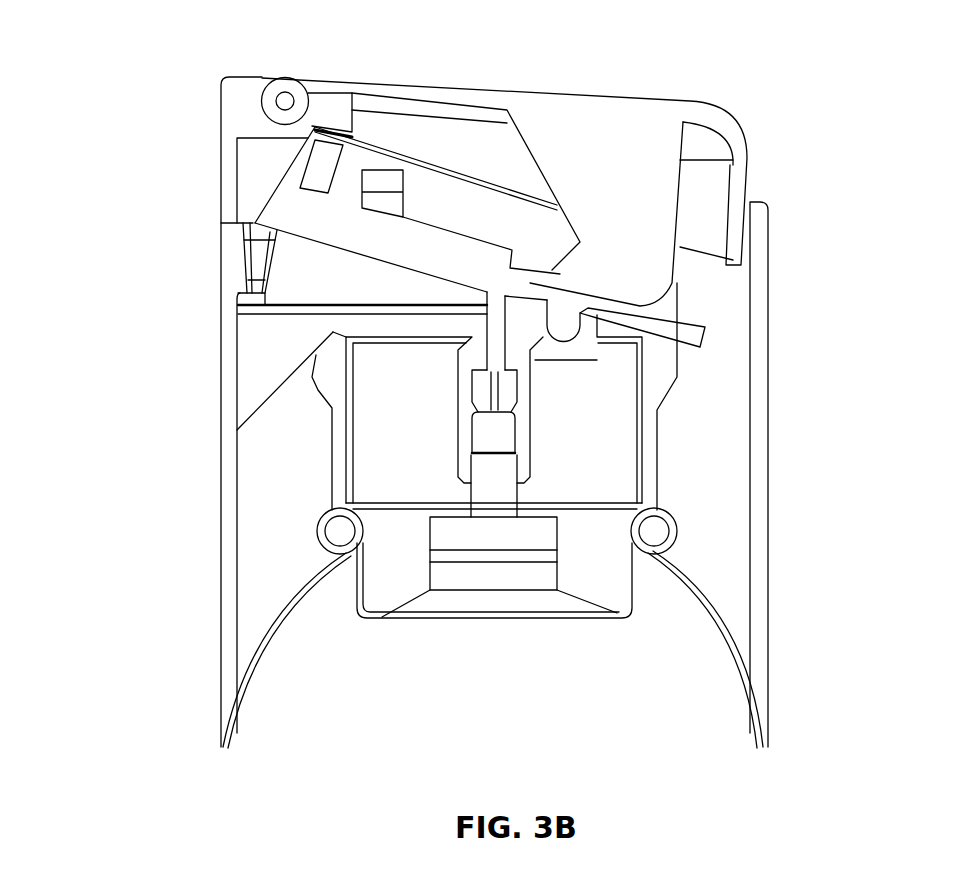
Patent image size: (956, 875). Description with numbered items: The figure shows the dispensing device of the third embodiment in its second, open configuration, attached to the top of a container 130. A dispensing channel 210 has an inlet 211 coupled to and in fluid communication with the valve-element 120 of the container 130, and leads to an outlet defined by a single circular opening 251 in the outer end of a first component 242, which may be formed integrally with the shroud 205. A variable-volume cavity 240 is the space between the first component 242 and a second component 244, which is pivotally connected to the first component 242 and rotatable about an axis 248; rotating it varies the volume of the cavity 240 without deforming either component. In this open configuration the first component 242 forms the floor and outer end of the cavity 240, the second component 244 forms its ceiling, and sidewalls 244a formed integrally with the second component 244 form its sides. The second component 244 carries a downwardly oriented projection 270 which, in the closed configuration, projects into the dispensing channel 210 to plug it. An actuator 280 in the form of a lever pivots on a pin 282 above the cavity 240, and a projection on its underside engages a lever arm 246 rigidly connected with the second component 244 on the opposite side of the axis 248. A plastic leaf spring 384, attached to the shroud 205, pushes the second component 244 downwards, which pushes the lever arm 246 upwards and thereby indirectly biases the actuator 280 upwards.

The shroud 205 is at (230, 542).
The actuator 280 is at (553, 105).
The pin 282 is at (290, 92).
The second component 244 is at (288, 197).
The plastic leaf spring 384 is at (392, 183).
The variable-volume cavity 240 is at (305, 262).
The opening 251 is at (245, 284).
The first component 242 is at (262, 325).
The sidewalls 244a is at (300, 335).
The downwardly oriented projection 270 is at (493, 307).
The axis 248 is at (563, 323).
The lever arm 246 is at (700, 322).
The dispensing channel 210 is at (495, 353).
The inlet 211 is at (468, 440).
The valve-element 120 is at (478, 498).
The container 130 is at (253, 673).